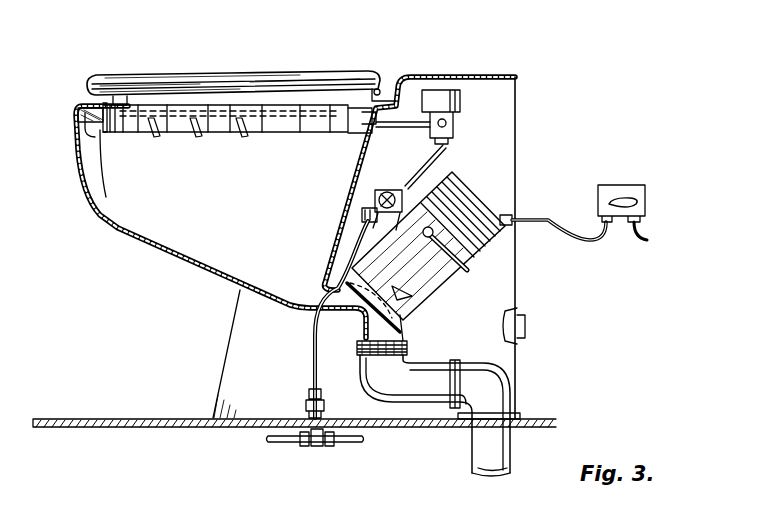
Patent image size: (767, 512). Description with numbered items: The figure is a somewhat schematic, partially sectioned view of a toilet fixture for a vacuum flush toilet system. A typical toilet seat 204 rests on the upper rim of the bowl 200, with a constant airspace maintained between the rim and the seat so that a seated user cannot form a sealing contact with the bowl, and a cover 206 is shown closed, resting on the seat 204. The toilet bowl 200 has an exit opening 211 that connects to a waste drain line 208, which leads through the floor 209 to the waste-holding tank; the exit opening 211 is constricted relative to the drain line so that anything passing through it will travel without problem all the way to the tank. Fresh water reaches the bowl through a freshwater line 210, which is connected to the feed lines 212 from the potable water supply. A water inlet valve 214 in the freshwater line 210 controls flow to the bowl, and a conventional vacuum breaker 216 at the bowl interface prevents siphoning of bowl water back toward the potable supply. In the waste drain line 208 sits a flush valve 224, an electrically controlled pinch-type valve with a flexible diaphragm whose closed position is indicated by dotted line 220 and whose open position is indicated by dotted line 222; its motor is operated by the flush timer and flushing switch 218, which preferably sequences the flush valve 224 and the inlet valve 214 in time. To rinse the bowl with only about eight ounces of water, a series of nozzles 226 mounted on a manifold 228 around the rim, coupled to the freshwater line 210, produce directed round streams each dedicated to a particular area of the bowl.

The toilet bowl 200 is at (272, 290).
The toilet seat 204 is at (88, 93).
The cover 206 is at (204, 76).
The waste drain line 208 is at (423, 400).
The floor 209 is at (126, 429).
The freshwater line 210 is at (318, 368).
The exit opening 211 is at (322, 292).
The feed lines 212 is at (346, 441).
The water inlet valve 214 is at (387, 192).
The vacuum breaker 216 is at (443, 90).
The flush timer and flushing switch 218 is at (645, 200).
The closed position of diaphragm 220 is at (402, 336).
The open position of diaphragm 222 is at (412, 297).
The flush valve 224 is at (500, 238).
The nozzles 226 is at (157, 137).
The manifold 228 is at (312, 122).